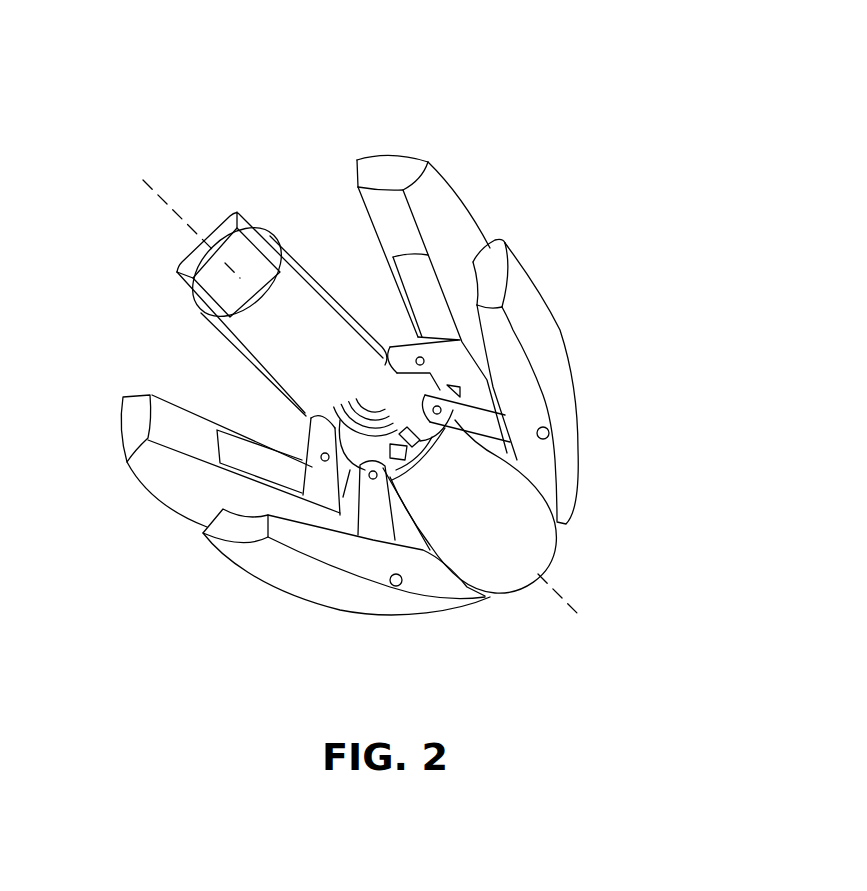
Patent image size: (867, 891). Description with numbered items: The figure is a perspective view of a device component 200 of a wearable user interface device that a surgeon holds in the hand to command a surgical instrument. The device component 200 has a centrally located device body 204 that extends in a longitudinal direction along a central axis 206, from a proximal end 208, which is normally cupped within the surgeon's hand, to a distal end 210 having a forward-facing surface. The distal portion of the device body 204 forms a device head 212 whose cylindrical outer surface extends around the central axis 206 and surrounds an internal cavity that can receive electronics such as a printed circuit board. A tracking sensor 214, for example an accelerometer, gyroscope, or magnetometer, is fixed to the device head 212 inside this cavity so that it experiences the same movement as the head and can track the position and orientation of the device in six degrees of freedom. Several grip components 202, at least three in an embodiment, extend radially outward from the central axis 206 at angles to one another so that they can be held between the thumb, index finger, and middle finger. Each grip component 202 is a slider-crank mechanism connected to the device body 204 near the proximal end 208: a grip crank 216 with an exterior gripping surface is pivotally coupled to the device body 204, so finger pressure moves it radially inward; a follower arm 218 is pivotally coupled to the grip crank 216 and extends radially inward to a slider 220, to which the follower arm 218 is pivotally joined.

The device component 200 is at (461, 116).
The grip component 202 is at (572, 278).
The device body 204 is at (254, 346).
The central axis 206 is at (157, 193).
The proximal end 208 is at (552, 557).
The distal end 210 is at (193, 295).
The device head 212 is at (312, 289).
The tracking sensor 214 is at (240, 253).
The grip crank 216 is at (528, 510).
The follower arm 218 is at (480, 388).
The slider 220 is at (305, 410).